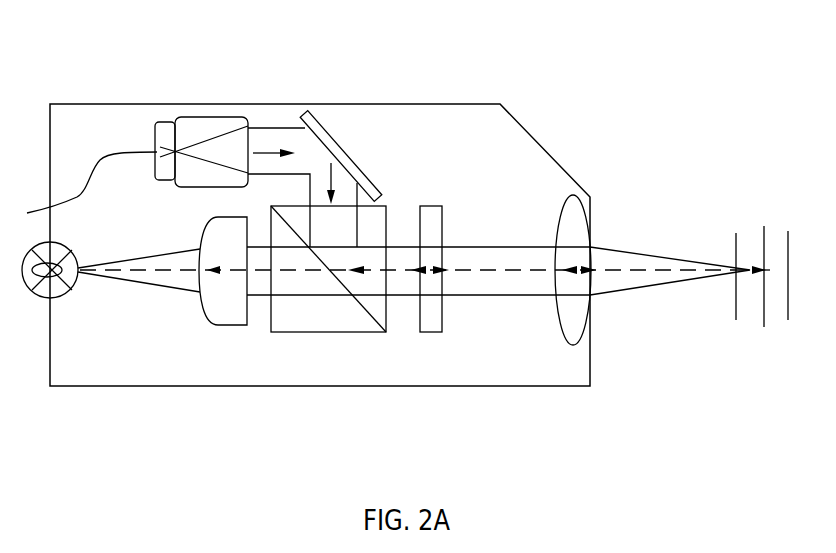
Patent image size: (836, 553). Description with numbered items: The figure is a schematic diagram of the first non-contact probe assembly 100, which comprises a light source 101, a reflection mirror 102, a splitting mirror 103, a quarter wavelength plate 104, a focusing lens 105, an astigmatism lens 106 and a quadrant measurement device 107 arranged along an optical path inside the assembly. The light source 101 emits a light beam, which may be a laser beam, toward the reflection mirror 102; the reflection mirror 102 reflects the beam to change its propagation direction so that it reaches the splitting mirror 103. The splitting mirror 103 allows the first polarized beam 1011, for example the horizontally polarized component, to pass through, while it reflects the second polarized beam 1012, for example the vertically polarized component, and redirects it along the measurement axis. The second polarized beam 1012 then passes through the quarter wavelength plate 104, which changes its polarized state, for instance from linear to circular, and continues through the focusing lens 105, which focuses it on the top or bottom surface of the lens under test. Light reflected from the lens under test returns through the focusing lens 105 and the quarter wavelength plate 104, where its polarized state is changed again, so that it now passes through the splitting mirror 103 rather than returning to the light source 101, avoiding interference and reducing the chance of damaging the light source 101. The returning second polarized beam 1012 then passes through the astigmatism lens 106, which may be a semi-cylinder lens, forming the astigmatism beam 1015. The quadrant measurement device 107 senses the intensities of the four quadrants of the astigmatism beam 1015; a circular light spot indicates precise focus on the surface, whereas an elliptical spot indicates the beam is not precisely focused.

The first non-contact probe assembly 100 is at (452, 104).
The light source 101 is at (197, 127).
The first polarized beam 1011 is at (264, 134).
The second polarized beam 1012 is at (500, 280).
The reflection mirror 102 is at (353, 162).
The splitting mirror 103 is at (333, 320).
The quarter wavelength plate 104 is at (434, 318).
The focusing lens 105 is at (578, 335).
The astigmatism lens 106 is at (230, 320).
The quadrant measurement device 107 is at (40, 293).
The astigmatism beam 1015 is at (140, 277).